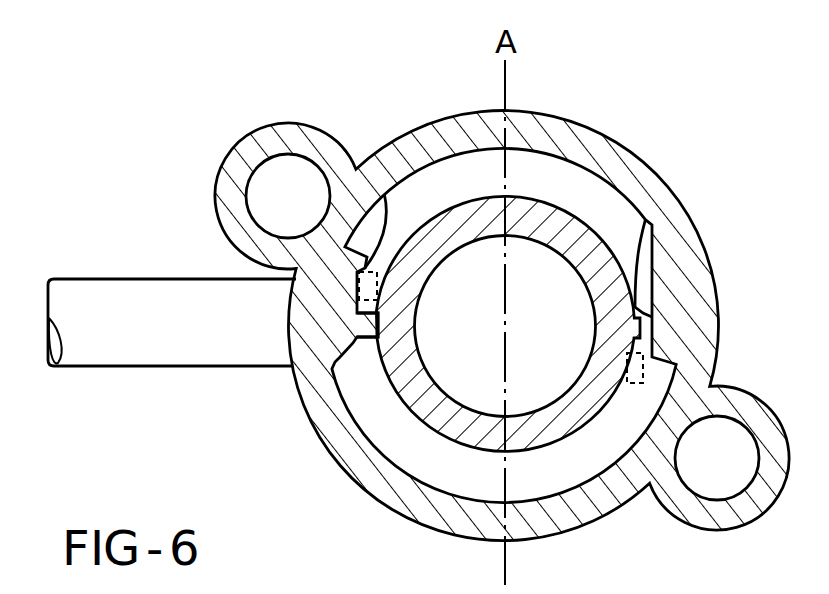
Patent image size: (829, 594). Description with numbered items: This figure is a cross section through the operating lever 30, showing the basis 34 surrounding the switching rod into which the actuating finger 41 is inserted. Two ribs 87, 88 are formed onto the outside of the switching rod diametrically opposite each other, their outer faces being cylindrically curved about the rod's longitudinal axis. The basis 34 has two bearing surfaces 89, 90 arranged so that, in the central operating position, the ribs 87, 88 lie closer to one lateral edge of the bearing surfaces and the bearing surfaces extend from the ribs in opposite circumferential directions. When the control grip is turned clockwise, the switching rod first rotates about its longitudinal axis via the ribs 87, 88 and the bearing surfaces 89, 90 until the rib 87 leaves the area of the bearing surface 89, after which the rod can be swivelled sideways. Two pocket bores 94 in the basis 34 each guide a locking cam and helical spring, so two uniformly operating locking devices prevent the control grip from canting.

The operating lever 30 is at (398, 94).
The basis 34 is at (560, 118).
The actuating finger 41 is at (133, 291).
The rib 87 is at (653, 318).
The rib 88 is at (355, 322).
The bearing surface 89 is at (651, 224).
The bearing surface 90 is at (384, 194).
The pocket bore 94 is at (260, 178).